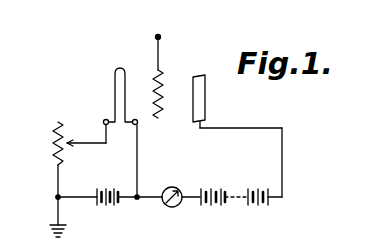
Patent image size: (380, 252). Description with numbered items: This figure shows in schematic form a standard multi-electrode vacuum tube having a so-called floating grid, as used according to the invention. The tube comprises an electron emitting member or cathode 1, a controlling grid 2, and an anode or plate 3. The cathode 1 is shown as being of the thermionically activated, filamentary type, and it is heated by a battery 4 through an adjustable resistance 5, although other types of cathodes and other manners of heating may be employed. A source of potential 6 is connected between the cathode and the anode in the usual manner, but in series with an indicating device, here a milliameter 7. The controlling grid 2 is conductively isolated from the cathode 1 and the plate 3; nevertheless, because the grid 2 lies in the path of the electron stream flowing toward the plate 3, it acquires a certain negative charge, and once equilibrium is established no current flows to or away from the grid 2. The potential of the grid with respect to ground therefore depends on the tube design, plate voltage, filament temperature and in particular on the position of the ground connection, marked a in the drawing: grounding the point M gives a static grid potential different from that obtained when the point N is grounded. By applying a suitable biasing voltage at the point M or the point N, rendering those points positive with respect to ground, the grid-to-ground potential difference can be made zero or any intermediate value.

The cathode 1 is at (107, 84).
The controlling grid 2 is at (171, 87).
The anode 3 is at (202, 85).
The battery 4 is at (96, 212).
The adjustable resistance 5 is at (47, 148).
The source of potential 6 is at (225, 185).
The milliameter 7 is at (180, 185).
The point M is at (50, 197).
The point N is at (140, 198).
The earth connection a is at (47, 229).